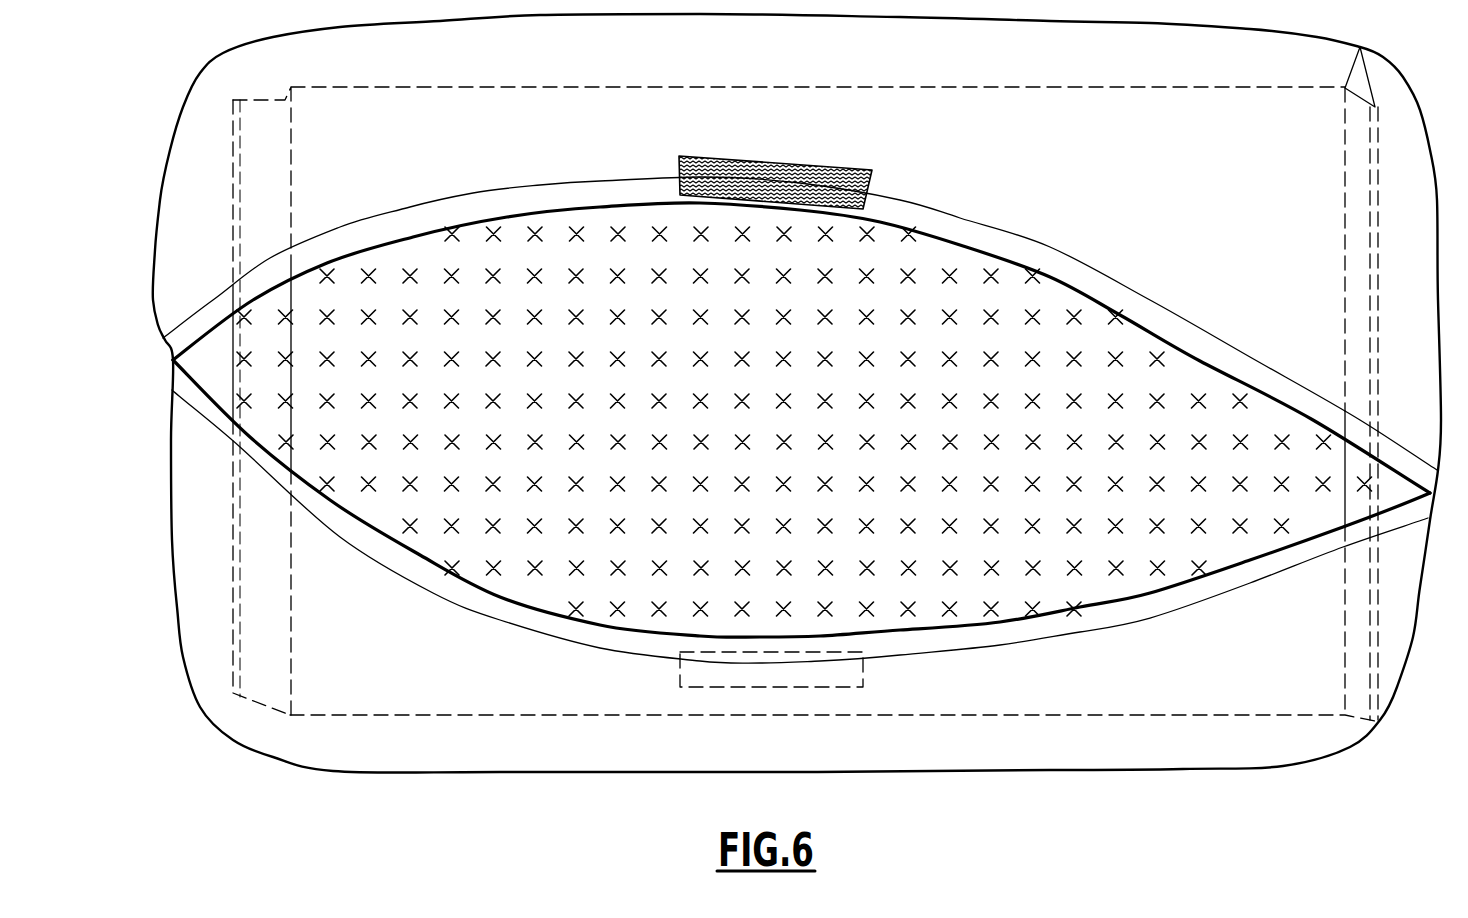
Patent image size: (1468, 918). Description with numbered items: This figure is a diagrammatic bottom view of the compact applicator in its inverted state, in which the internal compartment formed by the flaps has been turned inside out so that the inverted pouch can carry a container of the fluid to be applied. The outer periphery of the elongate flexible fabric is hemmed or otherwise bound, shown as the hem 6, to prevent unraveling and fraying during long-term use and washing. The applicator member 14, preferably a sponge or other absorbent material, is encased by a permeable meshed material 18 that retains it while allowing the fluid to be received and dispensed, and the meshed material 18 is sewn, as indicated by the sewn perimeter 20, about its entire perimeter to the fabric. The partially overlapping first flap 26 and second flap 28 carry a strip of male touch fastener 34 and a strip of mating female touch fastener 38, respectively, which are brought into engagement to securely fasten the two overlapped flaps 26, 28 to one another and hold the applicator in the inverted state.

The hem 6 is at (1223, 583).
The applicator member 14 is at (442, 87).
The meshed material 18 is at (540, 236).
The sewn perimeter 20 is at (237, 520).
The first flap 26 is at (1030, 122).
The second flap 28 is at (923, 695).
The male touch fastener 34 is at (827, 170).
The female touch fastener 38 is at (785, 677).